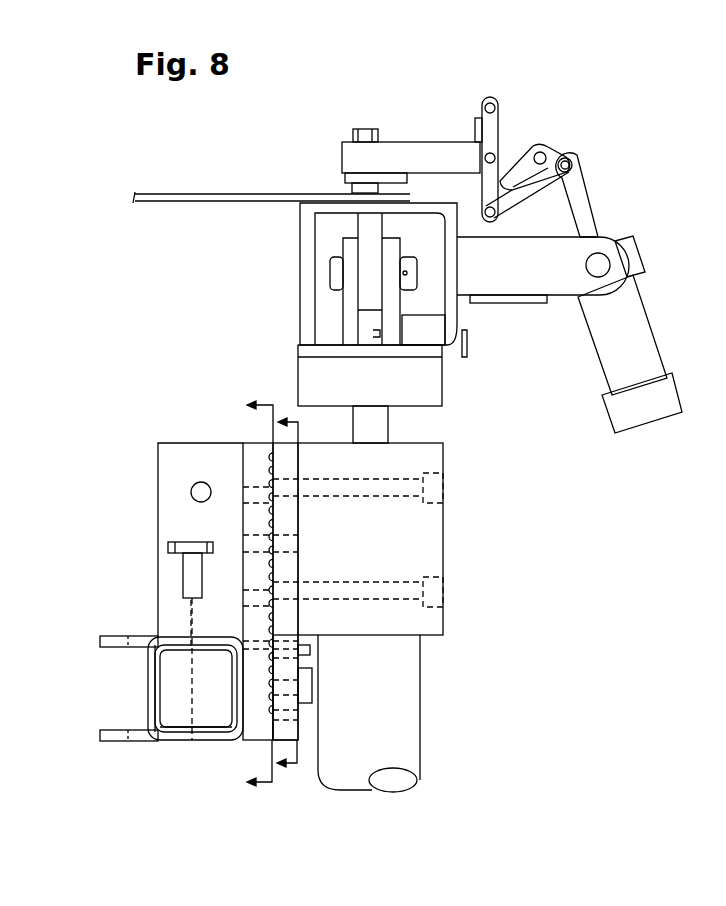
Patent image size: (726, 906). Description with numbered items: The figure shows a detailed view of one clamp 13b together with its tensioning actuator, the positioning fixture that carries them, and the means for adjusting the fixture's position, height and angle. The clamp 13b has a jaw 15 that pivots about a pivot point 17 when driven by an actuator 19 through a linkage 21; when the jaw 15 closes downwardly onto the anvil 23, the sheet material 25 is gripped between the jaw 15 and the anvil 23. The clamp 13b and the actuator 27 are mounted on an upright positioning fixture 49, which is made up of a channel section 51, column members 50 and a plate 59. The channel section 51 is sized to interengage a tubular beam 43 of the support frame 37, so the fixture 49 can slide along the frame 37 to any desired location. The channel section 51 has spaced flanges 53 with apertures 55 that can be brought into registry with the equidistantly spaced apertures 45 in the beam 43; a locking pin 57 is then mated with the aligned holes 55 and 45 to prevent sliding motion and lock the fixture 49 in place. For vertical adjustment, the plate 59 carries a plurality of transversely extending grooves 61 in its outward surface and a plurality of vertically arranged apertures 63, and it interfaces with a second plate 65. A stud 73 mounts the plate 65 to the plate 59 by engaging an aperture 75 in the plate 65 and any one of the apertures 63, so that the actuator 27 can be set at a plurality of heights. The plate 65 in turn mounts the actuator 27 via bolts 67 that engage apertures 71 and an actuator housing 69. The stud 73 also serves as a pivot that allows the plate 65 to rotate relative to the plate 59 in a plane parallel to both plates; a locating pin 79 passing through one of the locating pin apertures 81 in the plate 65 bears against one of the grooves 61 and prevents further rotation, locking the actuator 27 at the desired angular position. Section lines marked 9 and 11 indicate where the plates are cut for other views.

The jaw 15 is at (367, 128).
The linkage 21 is at (497, 128).
The pivot point 17 is at (541, 152).
The clamp 13b is at (593, 180).
The sheet material 25 is at (157, 202).
The anvil 23 is at (330, 212).
The actuator 19 is at (643, 343).
The plate 59 is at (255, 453).
The section line 9 is at (262, 597).
The section line 11 is at (301, 603).
The column members 50 is at (168, 463).
The apertures 71 is at (283, 582).
The locking pin 57 is at (190, 543).
The grooves 61 is at (278, 494).
The apertures 63 is at (278, 541).
The bolts 67 is at (435, 598).
The actuator housing 69 is at (432, 548).
The positioning fixture 49 is at (155, 619).
The channel section 51 is at (133, 636).
The locating pin apertures 81 is at (285, 723).
The locating pin 79 is at (310, 648).
The frame 37 is at (140, 683).
The apertures 45 is at (228, 687).
The stud 73 is at (310, 684).
The aperture 75 is at (285, 700).
The plate 65 is at (285, 735).
The actuator 27 is at (403, 757).
The flanges 53 is at (107, 742).
The tubular beams 43 is at (155, 742).
The apertures 55 is at (190, 742).